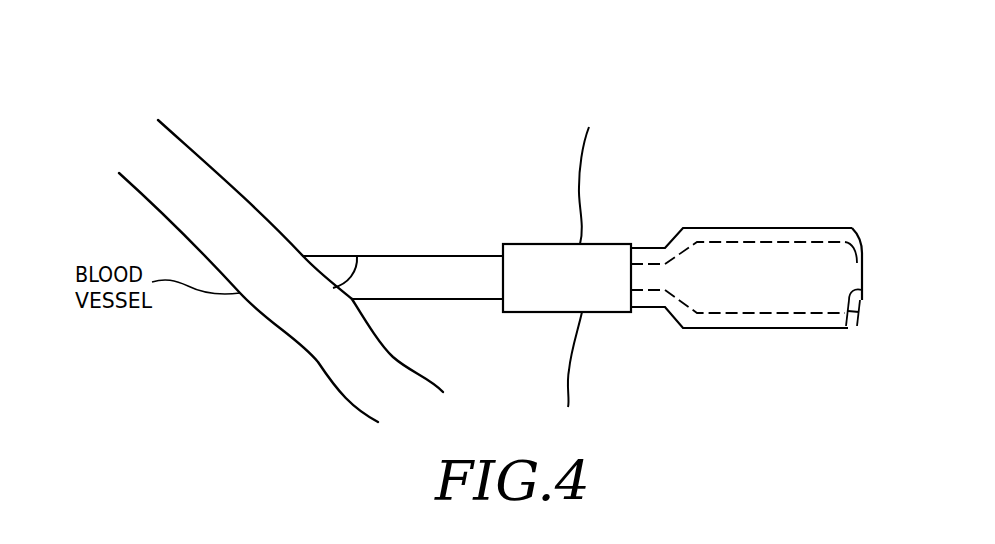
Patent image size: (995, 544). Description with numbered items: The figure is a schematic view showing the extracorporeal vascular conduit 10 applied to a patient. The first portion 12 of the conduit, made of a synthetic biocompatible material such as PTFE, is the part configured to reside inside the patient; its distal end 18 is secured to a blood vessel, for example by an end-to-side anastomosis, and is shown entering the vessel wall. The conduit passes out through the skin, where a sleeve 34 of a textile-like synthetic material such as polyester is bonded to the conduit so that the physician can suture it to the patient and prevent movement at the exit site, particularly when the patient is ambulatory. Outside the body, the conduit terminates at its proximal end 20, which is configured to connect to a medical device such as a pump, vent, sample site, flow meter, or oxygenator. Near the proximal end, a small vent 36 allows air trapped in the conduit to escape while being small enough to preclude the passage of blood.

The extracorporeal vascular conduit 10 is at (765, 243).
The first portion 12 is at (430, 256).
The distal end 18 is at (357, 256).
The proximal end 20 is at (863, 254).
The sleeve 34 is at (597, 244).
The vent 36 is at (851, 330).